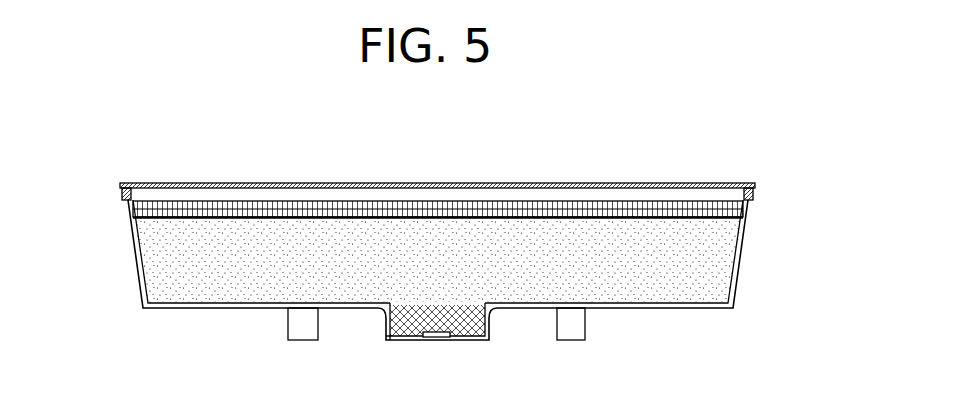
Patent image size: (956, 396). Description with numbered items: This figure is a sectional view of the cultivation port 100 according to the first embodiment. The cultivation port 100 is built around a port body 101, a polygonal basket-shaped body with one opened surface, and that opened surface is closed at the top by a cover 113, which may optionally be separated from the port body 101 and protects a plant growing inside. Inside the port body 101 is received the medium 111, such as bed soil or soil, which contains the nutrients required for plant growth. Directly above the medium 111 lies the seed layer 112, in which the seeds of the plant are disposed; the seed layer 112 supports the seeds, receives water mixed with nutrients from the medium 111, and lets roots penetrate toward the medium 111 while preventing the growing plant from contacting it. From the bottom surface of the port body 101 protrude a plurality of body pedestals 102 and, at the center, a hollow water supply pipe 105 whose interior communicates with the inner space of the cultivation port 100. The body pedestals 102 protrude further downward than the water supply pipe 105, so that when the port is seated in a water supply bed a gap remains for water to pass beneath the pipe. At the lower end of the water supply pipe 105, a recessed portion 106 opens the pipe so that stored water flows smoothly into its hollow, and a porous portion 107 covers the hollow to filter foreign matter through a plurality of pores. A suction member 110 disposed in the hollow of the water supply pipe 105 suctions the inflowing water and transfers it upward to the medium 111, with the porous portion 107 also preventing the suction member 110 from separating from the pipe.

The cultivation port 100 is at (128, 120).
The port body 101 is at (134, 244).
The body pedestal 102 is at (304, 340).
The water supply pipe 105 is at (489, 325).
The recessed portion 106 is at (386, 338).
The porous portion 107 is at (418, 342).
The suction member 110 is at (464, 325).
The medium 111 is at (725, 258).
The seed layer 112 is at (737, 210).
The cover 113 is at (733, 183).